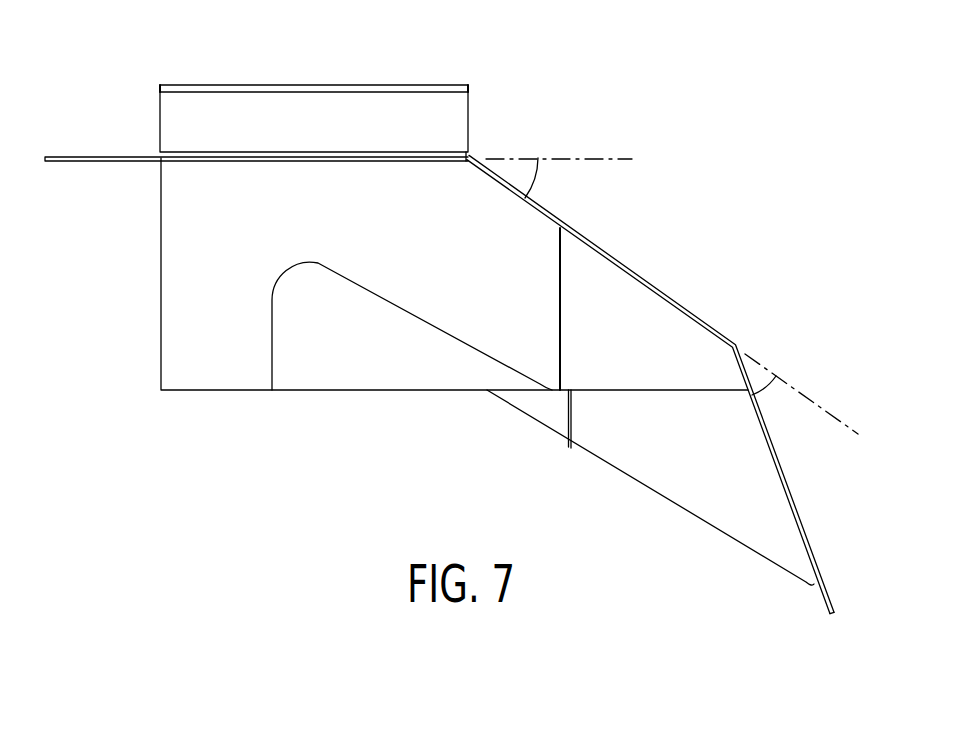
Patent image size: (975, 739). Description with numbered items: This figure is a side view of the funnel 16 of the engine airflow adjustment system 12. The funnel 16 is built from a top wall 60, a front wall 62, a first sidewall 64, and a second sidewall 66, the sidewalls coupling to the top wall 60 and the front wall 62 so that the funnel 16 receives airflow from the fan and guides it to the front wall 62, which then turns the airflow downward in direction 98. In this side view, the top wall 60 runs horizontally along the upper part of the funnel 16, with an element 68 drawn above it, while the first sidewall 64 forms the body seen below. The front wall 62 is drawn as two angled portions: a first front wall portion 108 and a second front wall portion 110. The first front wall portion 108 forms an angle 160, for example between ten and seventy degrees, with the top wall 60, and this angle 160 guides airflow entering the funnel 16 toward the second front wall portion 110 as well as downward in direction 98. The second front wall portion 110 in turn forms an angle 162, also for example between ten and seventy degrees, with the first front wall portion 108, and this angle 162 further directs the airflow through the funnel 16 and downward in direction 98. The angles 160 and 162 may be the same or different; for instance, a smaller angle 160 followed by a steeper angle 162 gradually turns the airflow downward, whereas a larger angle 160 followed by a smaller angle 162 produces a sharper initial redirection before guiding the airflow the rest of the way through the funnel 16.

The engine airflow adjustment system 12 is at (100, 1).
The funnel 16 is at (558, 92).
The top wall 60 is at (470, 153).
The front wall 62 is at (678, 158).
The first sidewall 64 is at (366, 406).
The second sidewall 66 is at (138, 180).
The top block 68 is at (302, 85).
The direction 98 is at (555, 528).
The first front wall portion 108 is at (660, 290).
The second front wall portion 110 is at (791, 516).
The angle 160 is at (537, 183).
The angle 162 is at (772, 392).